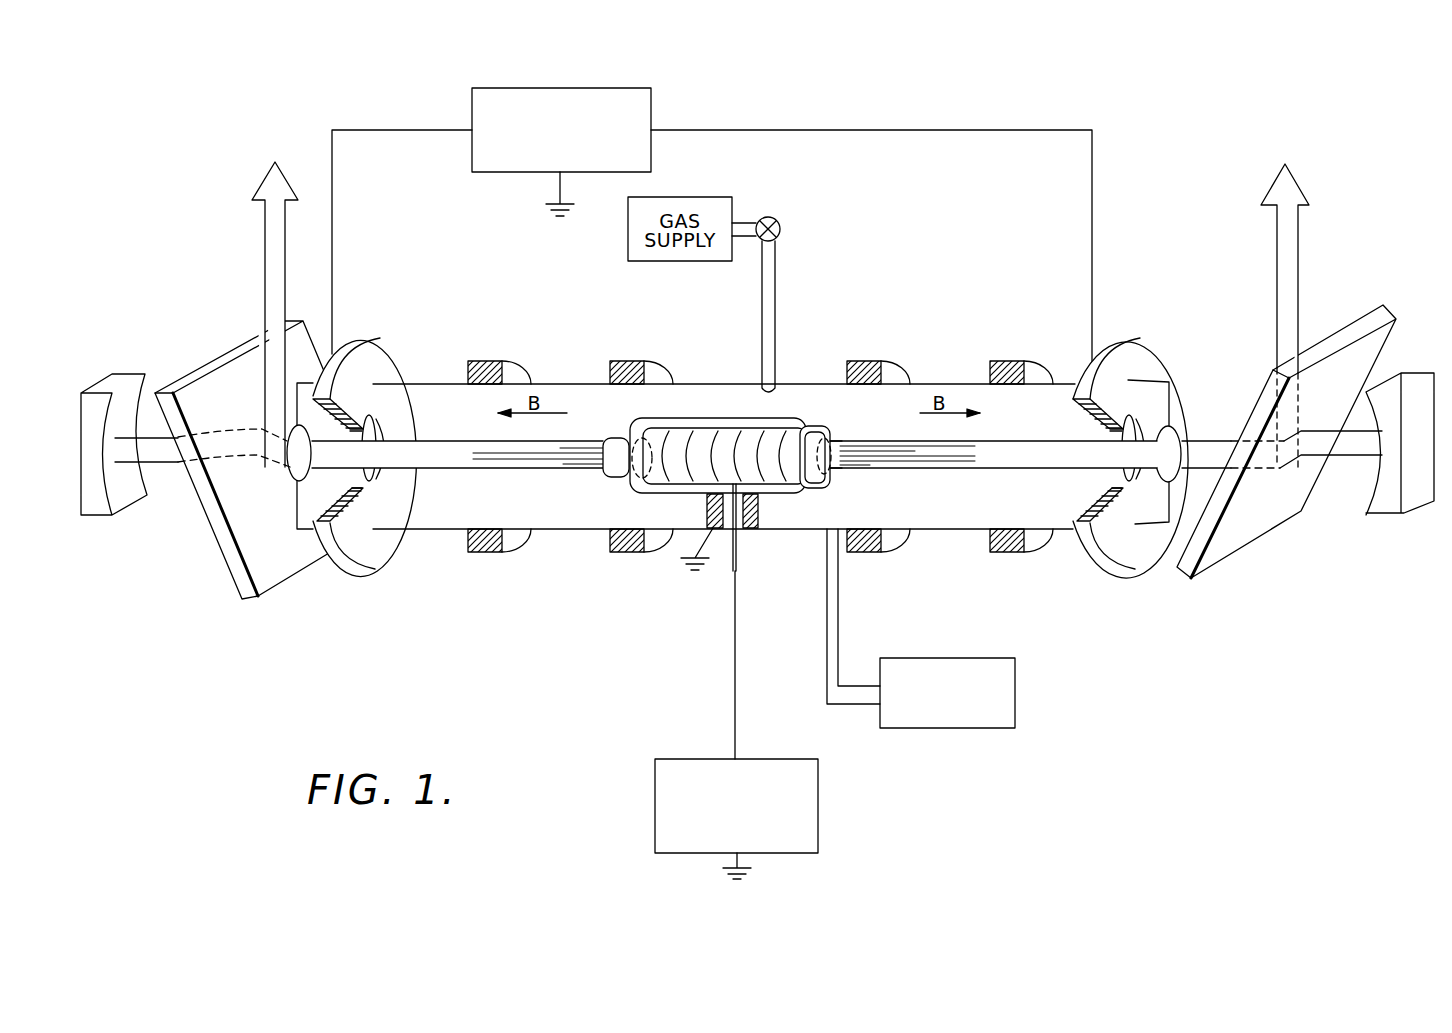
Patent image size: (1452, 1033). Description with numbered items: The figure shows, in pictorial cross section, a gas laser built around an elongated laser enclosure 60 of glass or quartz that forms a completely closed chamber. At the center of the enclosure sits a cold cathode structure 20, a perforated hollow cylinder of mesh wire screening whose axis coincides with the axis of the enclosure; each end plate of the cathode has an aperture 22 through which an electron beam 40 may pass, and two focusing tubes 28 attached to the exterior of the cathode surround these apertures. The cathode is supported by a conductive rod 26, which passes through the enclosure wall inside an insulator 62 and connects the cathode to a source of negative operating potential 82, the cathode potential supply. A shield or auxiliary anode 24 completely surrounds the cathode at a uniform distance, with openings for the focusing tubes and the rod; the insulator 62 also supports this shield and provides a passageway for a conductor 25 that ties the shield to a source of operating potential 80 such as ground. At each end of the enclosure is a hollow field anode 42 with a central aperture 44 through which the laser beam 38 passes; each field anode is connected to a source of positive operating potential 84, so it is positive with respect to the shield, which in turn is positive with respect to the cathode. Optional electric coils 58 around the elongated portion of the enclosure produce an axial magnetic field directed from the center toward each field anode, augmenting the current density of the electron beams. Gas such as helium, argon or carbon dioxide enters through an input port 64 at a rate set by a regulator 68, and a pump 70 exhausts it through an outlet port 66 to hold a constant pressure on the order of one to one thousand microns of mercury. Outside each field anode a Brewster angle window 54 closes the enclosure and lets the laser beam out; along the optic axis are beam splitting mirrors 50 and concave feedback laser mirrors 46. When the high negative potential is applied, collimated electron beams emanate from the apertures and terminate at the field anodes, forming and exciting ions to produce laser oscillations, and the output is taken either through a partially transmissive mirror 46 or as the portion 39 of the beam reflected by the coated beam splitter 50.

The cold cathode structure 20 is at (694, 428).
The aperture 22 is at (628, 473).
The shield or auxiliary anode 24 is at (784, 428).
The conductor 25 is at (707, 510).
The conductive rod 26 is at (740, 563).
The focusing tube 28 is at (620, 437).
The laser beam 38 is at (433, 470).
The reflected beam portion 39 is at (260, 228).
The electron beam 40 is at (563, 457).
The field anode 42 is at (392, 358).
The aperture 44 is at (397, 430).
The concave feedback laser mirror 46 is at (103, 514).
The beam splitting mirror 50 is at (223, 358).
The Brewster angle window 54 is at (290, 480).
The electric coil 58 is at (508, 372).
The laser enclosure 60 is at (700, 383).
The insulator 62 is at (757, 512).
The input port 64 is at (777, 388).
The outlet port 66 is at (822, 527).
The regulator 68 is at (785, 221).
The pump 70 is at (1017, 676).
The source of operating potential 80 is at (686, 567).
The source of negative operating potential 82 is at (818, 787).
The source of positive operating potential 84 is at (653, 105).